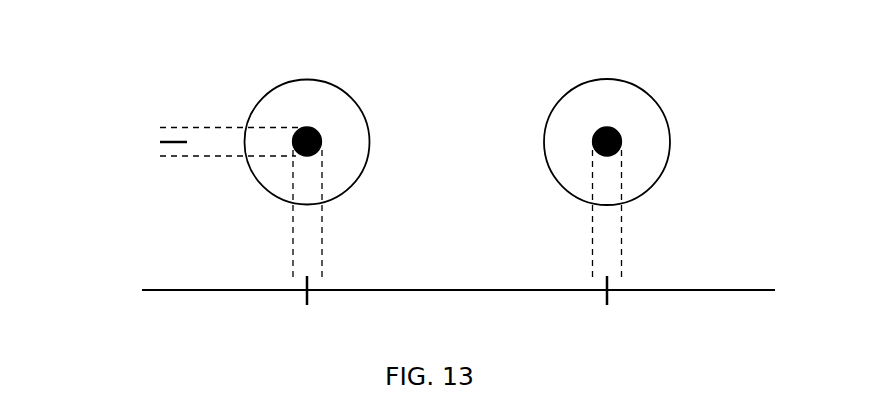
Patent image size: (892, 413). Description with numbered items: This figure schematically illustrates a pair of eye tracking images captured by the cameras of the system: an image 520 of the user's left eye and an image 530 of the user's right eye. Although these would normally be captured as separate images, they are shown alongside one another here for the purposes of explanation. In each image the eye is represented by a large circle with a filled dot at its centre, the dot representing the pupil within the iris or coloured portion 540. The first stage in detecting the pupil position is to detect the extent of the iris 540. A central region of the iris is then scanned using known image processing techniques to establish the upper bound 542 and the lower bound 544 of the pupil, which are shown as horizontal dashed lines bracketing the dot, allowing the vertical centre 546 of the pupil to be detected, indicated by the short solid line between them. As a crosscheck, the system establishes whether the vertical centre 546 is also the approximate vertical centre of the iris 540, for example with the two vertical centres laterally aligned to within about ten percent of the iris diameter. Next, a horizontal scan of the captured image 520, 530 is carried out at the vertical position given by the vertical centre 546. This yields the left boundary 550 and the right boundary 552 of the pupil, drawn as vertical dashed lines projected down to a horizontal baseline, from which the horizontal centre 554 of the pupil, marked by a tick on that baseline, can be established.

The image of the user's left eye 520 is at (658, 85).
The image of the user's right eye 530 is at (358, 84).
The iris or coloured portion 540 is at (370, 142).
The upper bound of the pupil 542 is at (208, 128).
The lower bound of the pupil 544 is at (192, 157).
The vertical centre of the pupil 546 is at (158, 142).
The left boundary of the pupil 550 is at (293, 280).
The right boundary of the pupil 552 is at (323, 280).
The horizontal centre of the pupil 554 is at (303, 297).